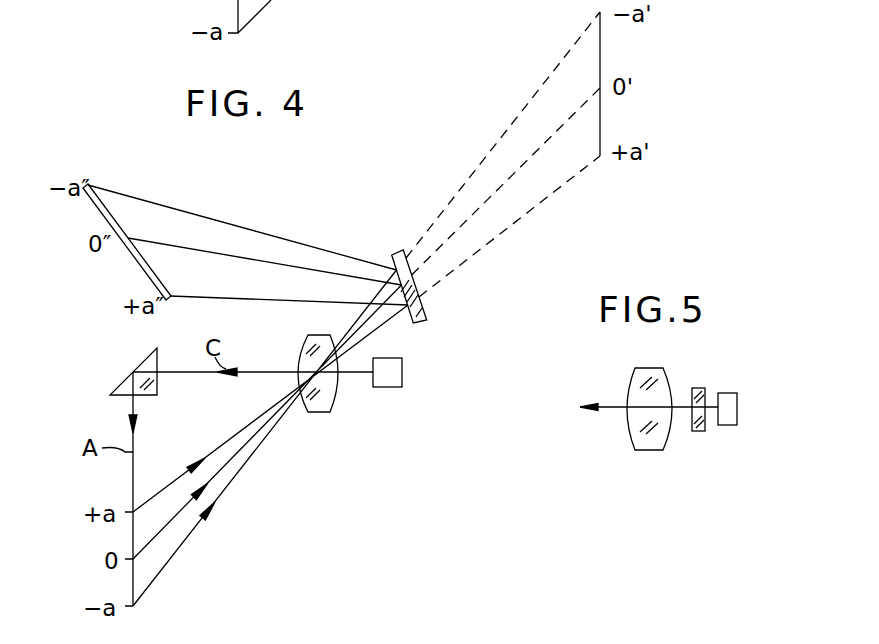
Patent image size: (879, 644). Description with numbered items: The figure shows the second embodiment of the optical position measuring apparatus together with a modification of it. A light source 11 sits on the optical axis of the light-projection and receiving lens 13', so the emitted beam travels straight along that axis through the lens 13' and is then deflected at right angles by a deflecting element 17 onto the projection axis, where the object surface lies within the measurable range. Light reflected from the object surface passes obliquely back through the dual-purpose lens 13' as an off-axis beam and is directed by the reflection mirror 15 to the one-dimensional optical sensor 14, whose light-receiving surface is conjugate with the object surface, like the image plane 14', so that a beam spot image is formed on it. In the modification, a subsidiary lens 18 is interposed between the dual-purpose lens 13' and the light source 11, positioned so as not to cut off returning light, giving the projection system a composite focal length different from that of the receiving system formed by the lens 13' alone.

In FIG. 4, the light source 11 is at (396, 387).
In FIG. 5, the light source 11 is at (731, 425).
In FIG. 4, the light-projection and receiving lens 13' is at (326, 401).
In FIG. 5, the light-projection and receiving lens 13' is at (648, 429).
In FIG. 4, the one-dimensional optical sensor 14 is at (127, 219).
In FIG. 4, the image plane 14' is at (503, 154).
In FIG. 4, the reflection mirror 15 is at (422, 320).
In FIG. 4, the deflecting prism 17 is at (147, 358).
In FIG. 5, the subsidiary lens 18 is at (699, 431).